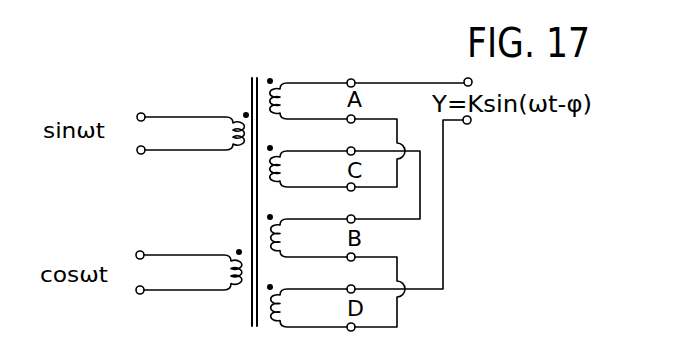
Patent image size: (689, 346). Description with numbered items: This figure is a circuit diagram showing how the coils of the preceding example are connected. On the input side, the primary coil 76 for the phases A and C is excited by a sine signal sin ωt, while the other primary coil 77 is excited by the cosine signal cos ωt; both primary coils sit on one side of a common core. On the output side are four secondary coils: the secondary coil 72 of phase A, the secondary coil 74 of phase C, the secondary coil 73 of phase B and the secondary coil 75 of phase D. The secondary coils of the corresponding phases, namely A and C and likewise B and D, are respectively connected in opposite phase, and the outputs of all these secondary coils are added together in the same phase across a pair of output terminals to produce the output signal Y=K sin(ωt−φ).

The secondary coil 72 is at (287, 99).
The secondary coil 73 is at (287, 238).
The secondary coil 74 is at (287, 170).
The secondary coil 75 is at (287, 308).
The primary coil 76 is at (229, 137).
The primary coil 77 is at (225, 275).